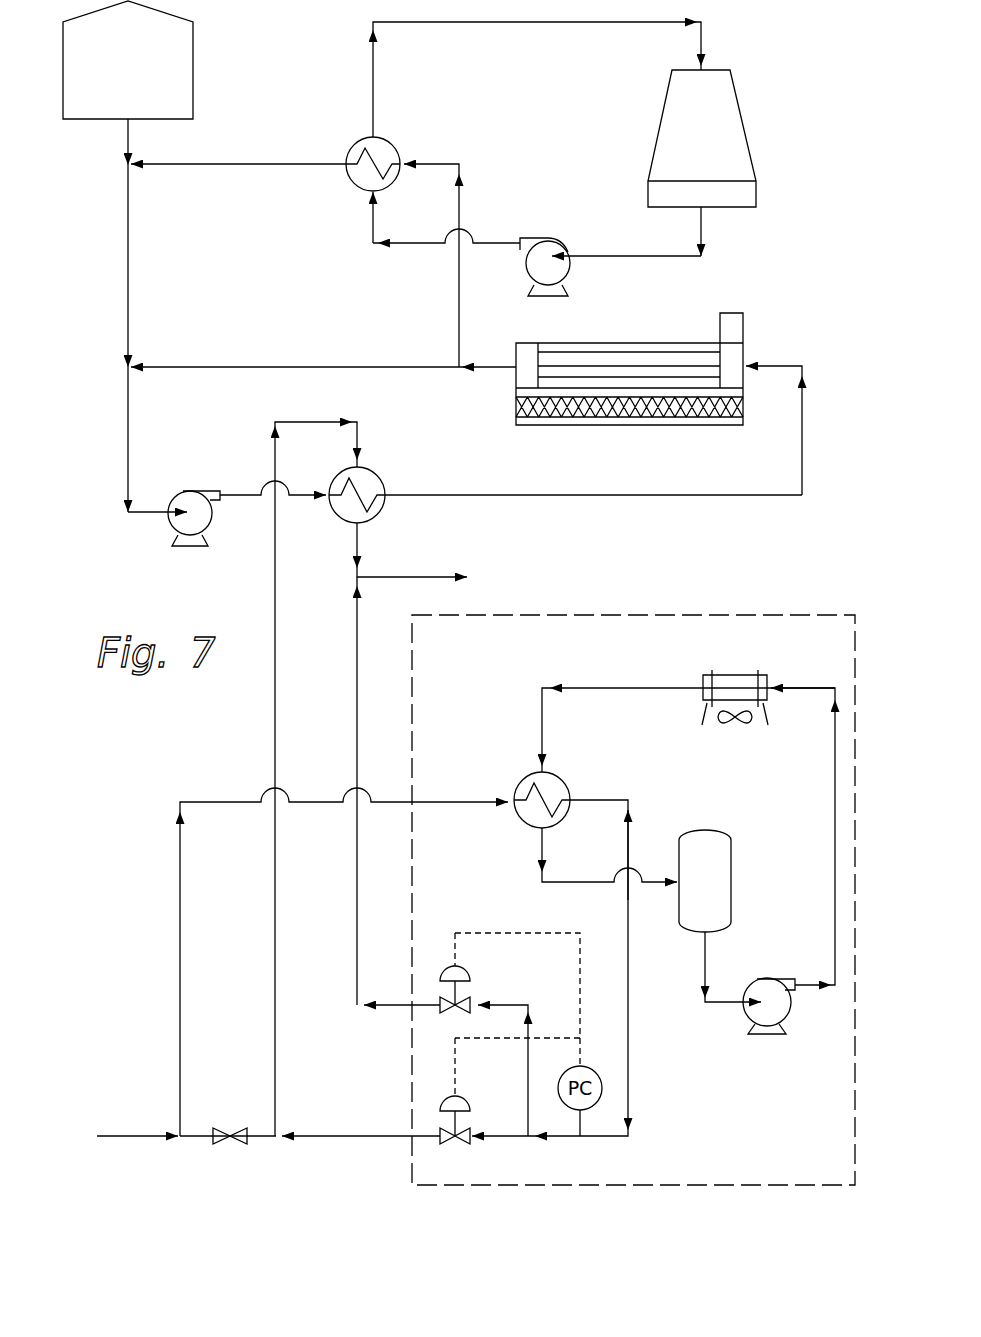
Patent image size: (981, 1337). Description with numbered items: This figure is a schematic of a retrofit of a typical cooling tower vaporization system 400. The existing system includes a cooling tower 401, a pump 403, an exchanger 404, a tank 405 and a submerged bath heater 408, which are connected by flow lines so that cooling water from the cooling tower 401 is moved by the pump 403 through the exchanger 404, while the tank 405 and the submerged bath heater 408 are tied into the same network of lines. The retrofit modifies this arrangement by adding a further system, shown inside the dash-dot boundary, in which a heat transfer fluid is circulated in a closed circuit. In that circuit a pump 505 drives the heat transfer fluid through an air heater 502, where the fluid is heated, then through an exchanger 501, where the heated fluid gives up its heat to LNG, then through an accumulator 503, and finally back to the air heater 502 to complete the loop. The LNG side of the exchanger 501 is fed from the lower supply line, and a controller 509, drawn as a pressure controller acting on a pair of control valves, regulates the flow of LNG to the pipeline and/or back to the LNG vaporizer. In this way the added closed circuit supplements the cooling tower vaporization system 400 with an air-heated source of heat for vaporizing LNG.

The cooling tower vaporization system 400 is at (747, 37).
The cooling tower 401 is at (661, 115).
The pump 403 is at (543, 240).
The exchanger 404 is at (381, 138).
The tank 405 is at (193, 62).
The submerged bath heater 408 is at (663, 342).
The exchanger 501 is at (527, 825).
The air heater 502 is at (730, 675).
The accumulator 503 is at (732, 860).
The pump 505 is at (772, 978).
The controller 509 is at (483, 932).